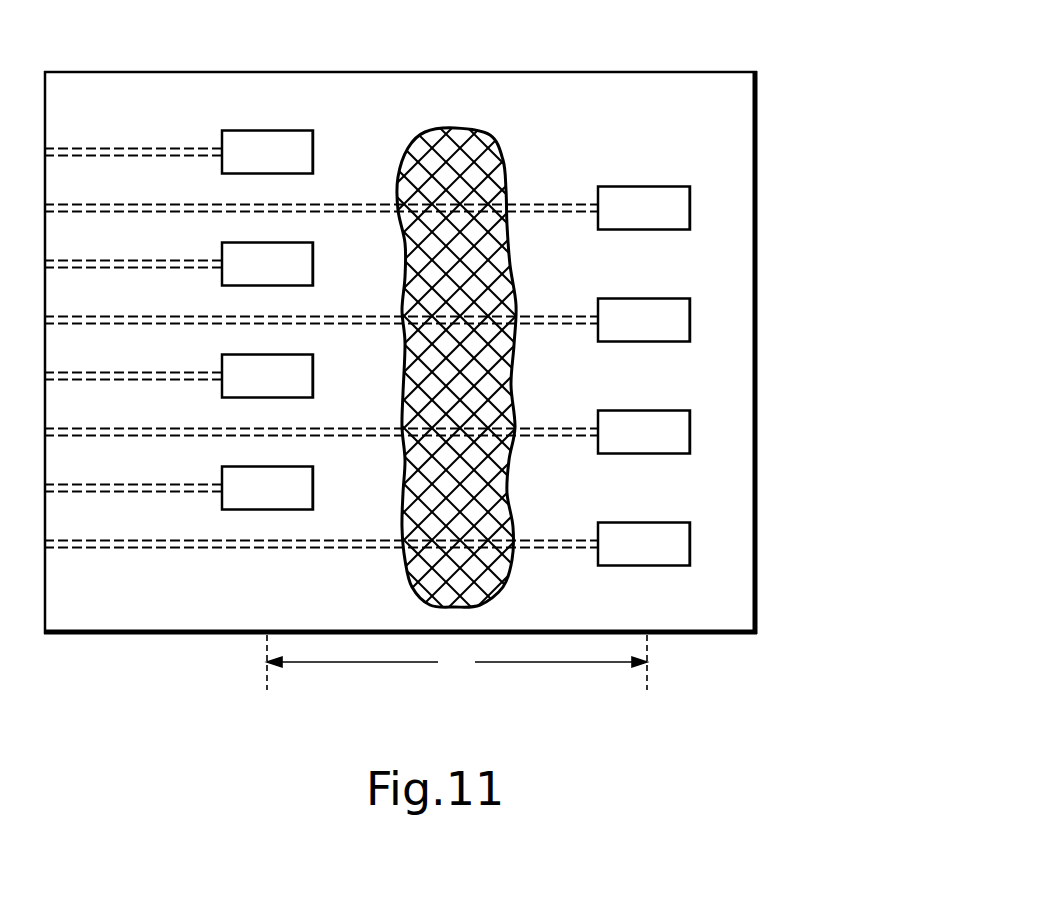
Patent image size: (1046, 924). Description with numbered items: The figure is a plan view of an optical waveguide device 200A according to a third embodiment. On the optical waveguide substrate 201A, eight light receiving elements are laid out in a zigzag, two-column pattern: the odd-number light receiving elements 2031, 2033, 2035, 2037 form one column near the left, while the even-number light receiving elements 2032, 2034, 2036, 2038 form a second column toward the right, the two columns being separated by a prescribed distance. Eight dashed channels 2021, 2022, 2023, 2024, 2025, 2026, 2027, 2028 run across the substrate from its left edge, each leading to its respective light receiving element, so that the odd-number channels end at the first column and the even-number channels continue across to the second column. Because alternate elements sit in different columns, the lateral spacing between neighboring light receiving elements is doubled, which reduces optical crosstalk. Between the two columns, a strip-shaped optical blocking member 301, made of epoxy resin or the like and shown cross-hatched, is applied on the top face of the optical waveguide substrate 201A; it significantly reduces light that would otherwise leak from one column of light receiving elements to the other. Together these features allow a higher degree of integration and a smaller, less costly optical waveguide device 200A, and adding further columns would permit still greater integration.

The optical waveguide device 200A is at (768, 132).
The optical waveguide substrate 201A is at (643, 72).
The optical waveguide 2021 is at (145, 132).
The optical waveguide 2022 is at (145, 188).
The optical waveguide 2023 is at (145, 244).
The optical waveguide 2024 is at (145, 300).
The optical waveguide 2025 is at (145, 356).
The optical waveguide 2026 is at (145, 412).
The optical waveguide 2027 is at (145, 468).
The optical waveguide 2028 is at (145, 524).
The first light receiving element 2031 is at (280, 131).
The second light receiving element 2032 is at (657, 187).
The third light receiving element 2033 is at (280, 243).
The fourth light receiving element 2034 is at (657, 299).
The fifth light receiving element 2035 is at (280, 355).
The sixth light receiving element 2036 is at (657, 411).
The seventh light receiving element 2037 is at (280, 467).
The eighth light receiving element 2038 is at (657, 523).
The optical blocking member 301 is at (487, 138).